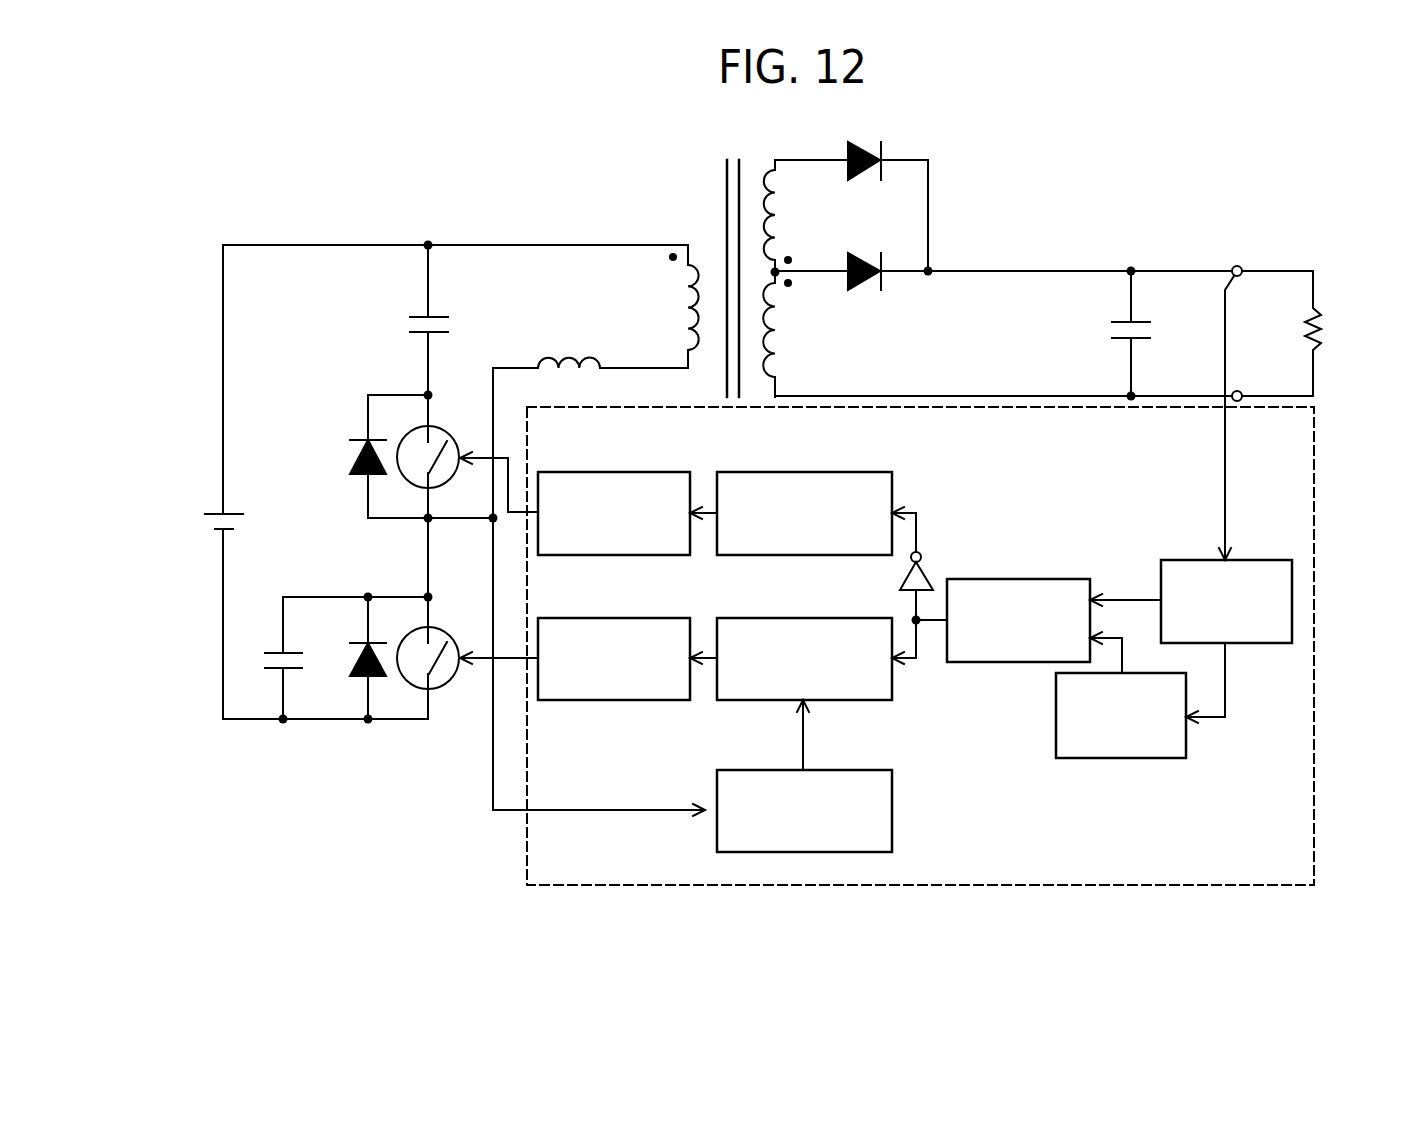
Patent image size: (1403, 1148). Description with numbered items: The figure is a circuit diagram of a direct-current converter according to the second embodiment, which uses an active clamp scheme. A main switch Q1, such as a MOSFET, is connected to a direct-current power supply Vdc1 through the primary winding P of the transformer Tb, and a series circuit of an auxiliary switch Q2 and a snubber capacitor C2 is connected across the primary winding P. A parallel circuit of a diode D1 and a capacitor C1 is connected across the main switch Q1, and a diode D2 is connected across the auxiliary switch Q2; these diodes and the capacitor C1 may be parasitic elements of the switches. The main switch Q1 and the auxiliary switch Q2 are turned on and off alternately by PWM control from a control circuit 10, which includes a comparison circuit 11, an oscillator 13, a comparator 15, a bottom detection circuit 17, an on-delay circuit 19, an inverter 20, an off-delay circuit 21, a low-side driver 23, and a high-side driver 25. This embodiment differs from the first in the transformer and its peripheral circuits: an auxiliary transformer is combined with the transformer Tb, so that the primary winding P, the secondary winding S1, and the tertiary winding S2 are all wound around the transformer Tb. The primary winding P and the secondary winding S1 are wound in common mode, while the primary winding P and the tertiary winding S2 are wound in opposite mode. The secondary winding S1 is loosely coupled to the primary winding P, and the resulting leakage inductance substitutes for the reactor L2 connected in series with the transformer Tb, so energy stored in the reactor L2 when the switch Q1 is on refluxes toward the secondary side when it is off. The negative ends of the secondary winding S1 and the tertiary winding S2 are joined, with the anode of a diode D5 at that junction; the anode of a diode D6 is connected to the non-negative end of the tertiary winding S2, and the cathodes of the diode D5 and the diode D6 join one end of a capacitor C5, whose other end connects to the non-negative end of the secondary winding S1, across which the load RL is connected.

The control circuit 10 is at (1130, 888).
The comparison circuit 11 is at (1240, 560).
The oscillator 13 is at (1097, 758).
The comparator 15 is at (1040, 579).
The bottom detection circuit 17 is at (858, 770).
The on-delay circuit 19 is at (833, 618).
The inverter 20 is at (928, 572).
The off-delay circuit 21 is at (855, 472).
The low-side driver 23 is at (635, 618).
The high-side driver 25 is at (635, 472).
The direct-current power supply Vdc1 is at (252, 520).
The capacitor C1 is at (266, 658).
The snubber capacitor C2 is at (413, 324).
The capacitor C5 is at (1150, 333).
The diode D1 is at (350, 658).
The diode D2 is at (349, 456).
The diode D5 is at (864, 256).
The diode D6 is at (864, 144).
The main switch Q1 is at (467, 668).
The auxiliary switch Q2 is at (467, 469).
The reactor L2 is at (599, 573).
The transformer Tb is at (738, 261).
The primary winding P is at (681, 306).
The secondary winding S1 is at (788, 340).
The tertiary winding S2 is at (788, 221).
The load resistor RL is at (1332, 333).